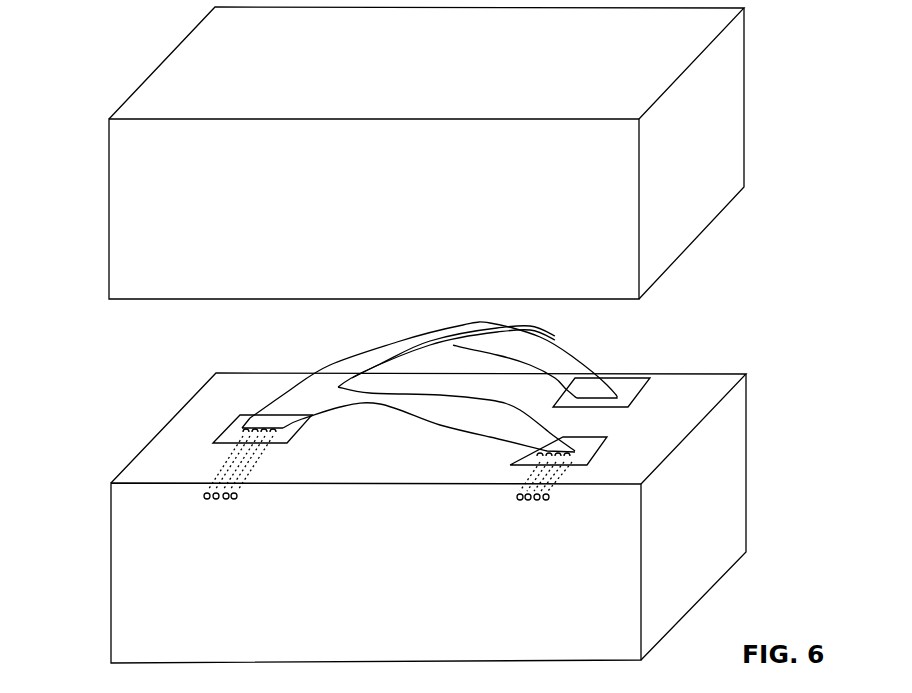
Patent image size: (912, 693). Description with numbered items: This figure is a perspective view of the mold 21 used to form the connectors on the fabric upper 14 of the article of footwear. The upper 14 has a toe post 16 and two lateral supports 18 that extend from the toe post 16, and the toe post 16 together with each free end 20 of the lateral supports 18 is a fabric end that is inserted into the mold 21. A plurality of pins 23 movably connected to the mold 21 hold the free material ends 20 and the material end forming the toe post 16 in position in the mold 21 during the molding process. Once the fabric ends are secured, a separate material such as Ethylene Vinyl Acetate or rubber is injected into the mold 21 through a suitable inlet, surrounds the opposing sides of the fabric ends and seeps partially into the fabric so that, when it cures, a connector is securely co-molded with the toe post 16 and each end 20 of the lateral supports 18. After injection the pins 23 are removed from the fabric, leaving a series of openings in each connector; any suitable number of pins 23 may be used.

The fabric upper 14 is at (274, 344).
The toe post 16 is at (263, 420).
The lateral supports 18 is at (422, 337).
The ends of the lateral supports 20 is at (585, 378).
The mold 21 is at (73, 5).
The pins 23 is at (205, 499).